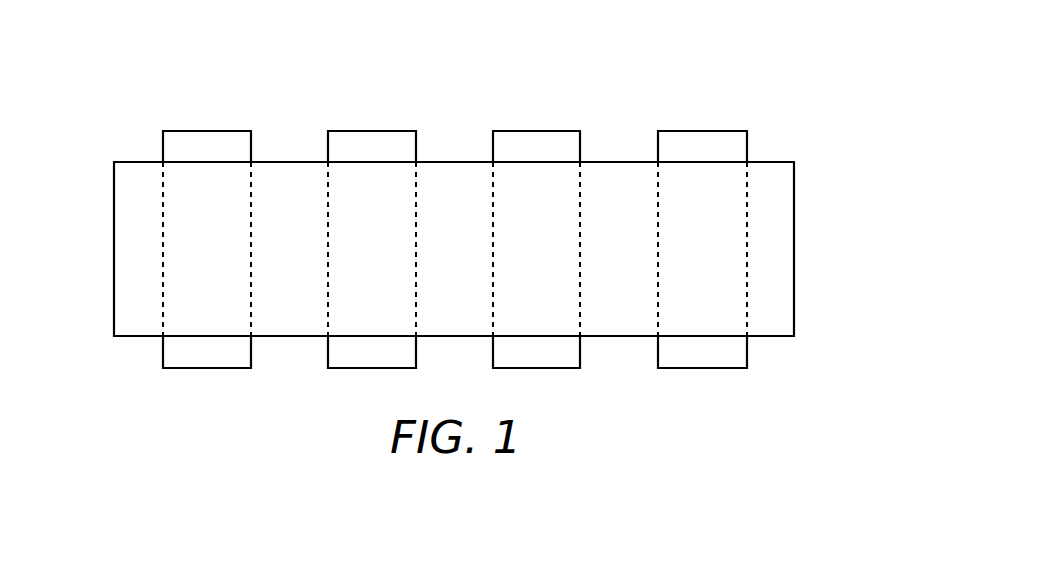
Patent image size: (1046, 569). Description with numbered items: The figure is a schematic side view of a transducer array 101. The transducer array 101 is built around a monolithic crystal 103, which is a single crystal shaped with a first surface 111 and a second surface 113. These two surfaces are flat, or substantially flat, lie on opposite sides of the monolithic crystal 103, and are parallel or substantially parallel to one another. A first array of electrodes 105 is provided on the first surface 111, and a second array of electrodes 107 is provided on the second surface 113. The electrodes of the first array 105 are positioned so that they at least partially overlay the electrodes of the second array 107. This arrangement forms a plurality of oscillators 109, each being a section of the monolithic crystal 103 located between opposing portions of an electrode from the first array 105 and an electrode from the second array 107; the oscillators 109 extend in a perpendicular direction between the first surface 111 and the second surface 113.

The transducer array 101 is at (463, 222).
The monolithic crystal 103 is at (795, 173).
The first array of electrodes 105 is at (202, 130).
The second array of electrodes 107 is at (703, 370).
The oscillators 109 is at (172, 247).
The first surface 111 is at (453, 161).
The second surface 113 is at (621, 339).